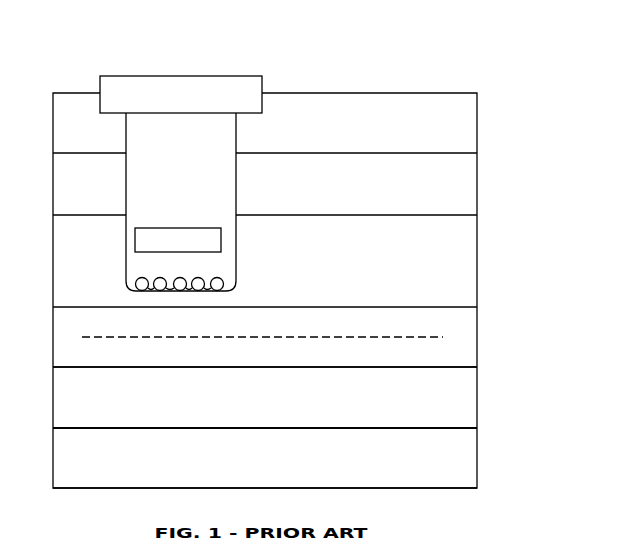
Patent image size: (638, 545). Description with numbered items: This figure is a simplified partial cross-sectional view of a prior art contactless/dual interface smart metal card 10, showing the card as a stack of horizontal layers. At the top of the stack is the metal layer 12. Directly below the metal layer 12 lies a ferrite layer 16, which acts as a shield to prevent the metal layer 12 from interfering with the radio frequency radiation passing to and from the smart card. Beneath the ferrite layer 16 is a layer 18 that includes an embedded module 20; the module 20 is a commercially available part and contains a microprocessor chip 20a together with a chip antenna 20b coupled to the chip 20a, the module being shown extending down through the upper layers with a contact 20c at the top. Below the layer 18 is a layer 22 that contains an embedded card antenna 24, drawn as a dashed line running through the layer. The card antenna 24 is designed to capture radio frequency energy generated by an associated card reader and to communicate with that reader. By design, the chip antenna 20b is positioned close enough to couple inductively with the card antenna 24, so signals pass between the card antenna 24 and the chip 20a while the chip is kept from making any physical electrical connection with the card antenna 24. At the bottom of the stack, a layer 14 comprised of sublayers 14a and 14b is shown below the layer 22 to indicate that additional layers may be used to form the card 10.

The smart card 10 is at (265, 272).
The metal layer 12 is at (265, 136).
The layer 14 is at (477, 368).
The sublayer 14a is at (265, 397).
The sublayer 14b is at (265, 458).
The ferrite layer 16 is at (265, 197).
The layer 18 is at (265, 280).
The embedded module 20 is at (172, 171).
The microprocessor chip 20a is at (140, 238).
The chip antenna 20b is at (213, 273).
The top contact pad 20c is at (120, 85).
The layer 22 is at (477, 348).
The card antenna 24 is at (123, 337).